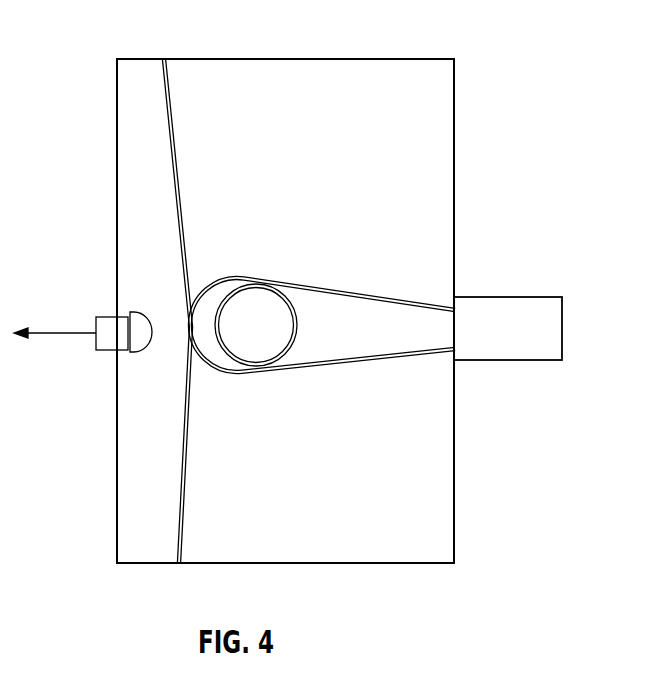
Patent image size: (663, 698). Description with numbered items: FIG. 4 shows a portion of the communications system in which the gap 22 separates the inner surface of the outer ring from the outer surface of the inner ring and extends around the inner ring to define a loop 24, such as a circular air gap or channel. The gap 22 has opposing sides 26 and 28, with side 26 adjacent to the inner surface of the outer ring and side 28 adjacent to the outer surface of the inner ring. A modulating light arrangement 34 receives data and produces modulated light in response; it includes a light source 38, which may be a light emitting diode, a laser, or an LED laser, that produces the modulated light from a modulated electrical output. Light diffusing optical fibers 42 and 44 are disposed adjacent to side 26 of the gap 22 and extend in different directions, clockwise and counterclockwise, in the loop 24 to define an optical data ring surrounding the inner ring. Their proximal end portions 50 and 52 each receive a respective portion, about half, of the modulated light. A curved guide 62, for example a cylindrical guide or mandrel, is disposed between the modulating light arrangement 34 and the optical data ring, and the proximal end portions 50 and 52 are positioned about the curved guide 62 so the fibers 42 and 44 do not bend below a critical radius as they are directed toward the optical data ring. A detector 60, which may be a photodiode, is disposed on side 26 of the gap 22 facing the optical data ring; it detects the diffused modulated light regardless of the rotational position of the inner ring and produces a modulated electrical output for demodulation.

The gap 22 is at (135, 74).
The loop 24 is at (147, 557).
The side of the gap 26 is at (168, 92).
The side of the gap 28 is at (127, 301).
The modulating light arrangement 34 is at (562, 320).
The light source 38 is at (527, 296).
The light diffusing optical fiber 42 is at (178, 520).
The light diffusing optical fiber 44 is at (167, 123).
The proximal end portion 50 is at (350, 292).
The proximal end portion 52 is at (303, 371).
The detector 60 is at (110, 351).
The curved guide 62 is at (259, 295).